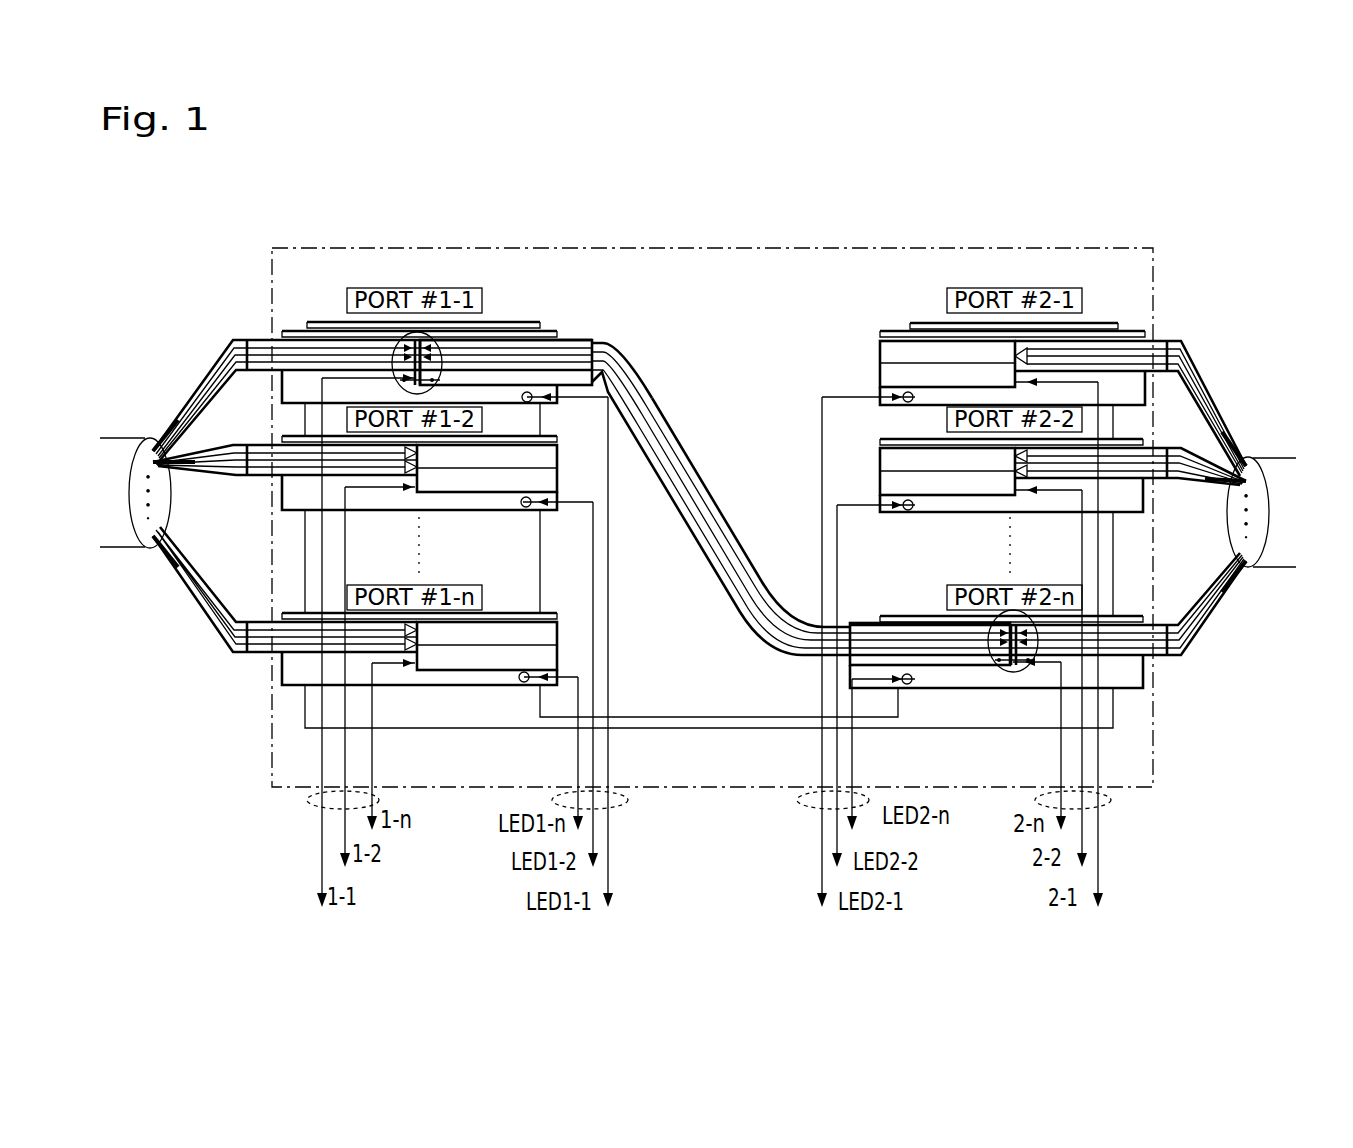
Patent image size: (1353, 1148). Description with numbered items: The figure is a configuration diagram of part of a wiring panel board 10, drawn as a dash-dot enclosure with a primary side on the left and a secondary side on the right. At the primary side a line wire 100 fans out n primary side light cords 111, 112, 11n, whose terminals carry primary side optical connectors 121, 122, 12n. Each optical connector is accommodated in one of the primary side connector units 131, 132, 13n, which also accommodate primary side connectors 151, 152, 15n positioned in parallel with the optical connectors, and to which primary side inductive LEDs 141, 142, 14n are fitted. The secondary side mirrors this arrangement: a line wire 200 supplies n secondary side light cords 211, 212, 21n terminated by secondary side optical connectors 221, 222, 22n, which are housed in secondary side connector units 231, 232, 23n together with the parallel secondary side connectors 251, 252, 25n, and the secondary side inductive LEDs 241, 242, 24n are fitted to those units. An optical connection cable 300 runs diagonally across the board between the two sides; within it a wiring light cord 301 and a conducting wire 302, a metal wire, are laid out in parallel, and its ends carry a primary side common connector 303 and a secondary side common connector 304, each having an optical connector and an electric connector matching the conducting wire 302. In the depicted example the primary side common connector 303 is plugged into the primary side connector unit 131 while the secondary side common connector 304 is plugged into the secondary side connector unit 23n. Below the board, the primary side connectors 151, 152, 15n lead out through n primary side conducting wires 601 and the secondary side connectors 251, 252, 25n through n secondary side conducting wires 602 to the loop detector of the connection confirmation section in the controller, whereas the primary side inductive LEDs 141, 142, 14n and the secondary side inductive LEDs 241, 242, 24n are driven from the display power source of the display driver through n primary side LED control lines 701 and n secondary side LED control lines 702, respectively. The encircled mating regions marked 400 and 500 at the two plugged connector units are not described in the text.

The panel board 10 is at (300, 258).
The line wire 100 is at (122, 560).
The primary side light cord 111 is at (192, 395).
The primary side light cord 112 is at (212, 476).
The primary side light cord 11n is at (190, 612).
The primary side optical connector 121 is at (262, 340).
The primary side optical connector 122 is at (257, 470).
The primary side optical connector 12n is at (262, 650).
The primary side connector unit 131 is at (290, 386).
The primary side connector unit 132 is at (272, 520).
The primary side connector unit 13n is at (290, 690).
The primary side inductive LED 141 is at (540, 410).
The primary side inductive LED 142 is at (522, 507).
The primary side inductive LED 14n is at (522, 684).
The primary side connector 151 is at (395, 385).
The primary side connector 152 is at (398, 492).
The primary side connector 15n is at (408, 670).
The line wire 200 is at (1270, 455).
The secondary side light cord 211 is at (1195, 398).
The secondary side light cord 212 is at (1194, 470).
The secondary side light cord 21n is at (1192, 605).
The secondary side optical connector 221 is at (1160, 345).
The secondary side optical connector 222 is at (1152, 478).
The secondary side optical connector 22n is at (1165, 660).
The secondary side connector unit 231 is at (900, 350).
The secondary side connector unit 232 is at (905, 460).
The secondary side connector unit 23n is at (920, 625).
The secondary side inductive LED 241 is at (905, 405).
The secondary side inductive LED 242 is at (905, 512).
The secondary side inductive LED 24n is at (906, 686).
The secondary side connector 251 is at (1012, 381).
The secondary side connector 252 is at (1005, 497).
The secondary side connector 25n is at (1005, 672).
The optical connection cable 300 is at (735, 478).
The wiring light cord 301 is at (655, 410).
The conducting wire 302 is at (672, 515).
The primary side common connector 303 is at (584, 340).
The secondary side common connector 304 is at (862, 622).
The connector mating portion 400 is at (427, 362).
The connector mating portion 500 is at (1030, 665).
The primary side conducting wires 601 is at (300, 808).
The secondary side conducting wires 602 is at (1105, 808).
The primary side LED control lines 701 is at (620, 808).
The secondary side LED control lines 702 is at (805, 808).